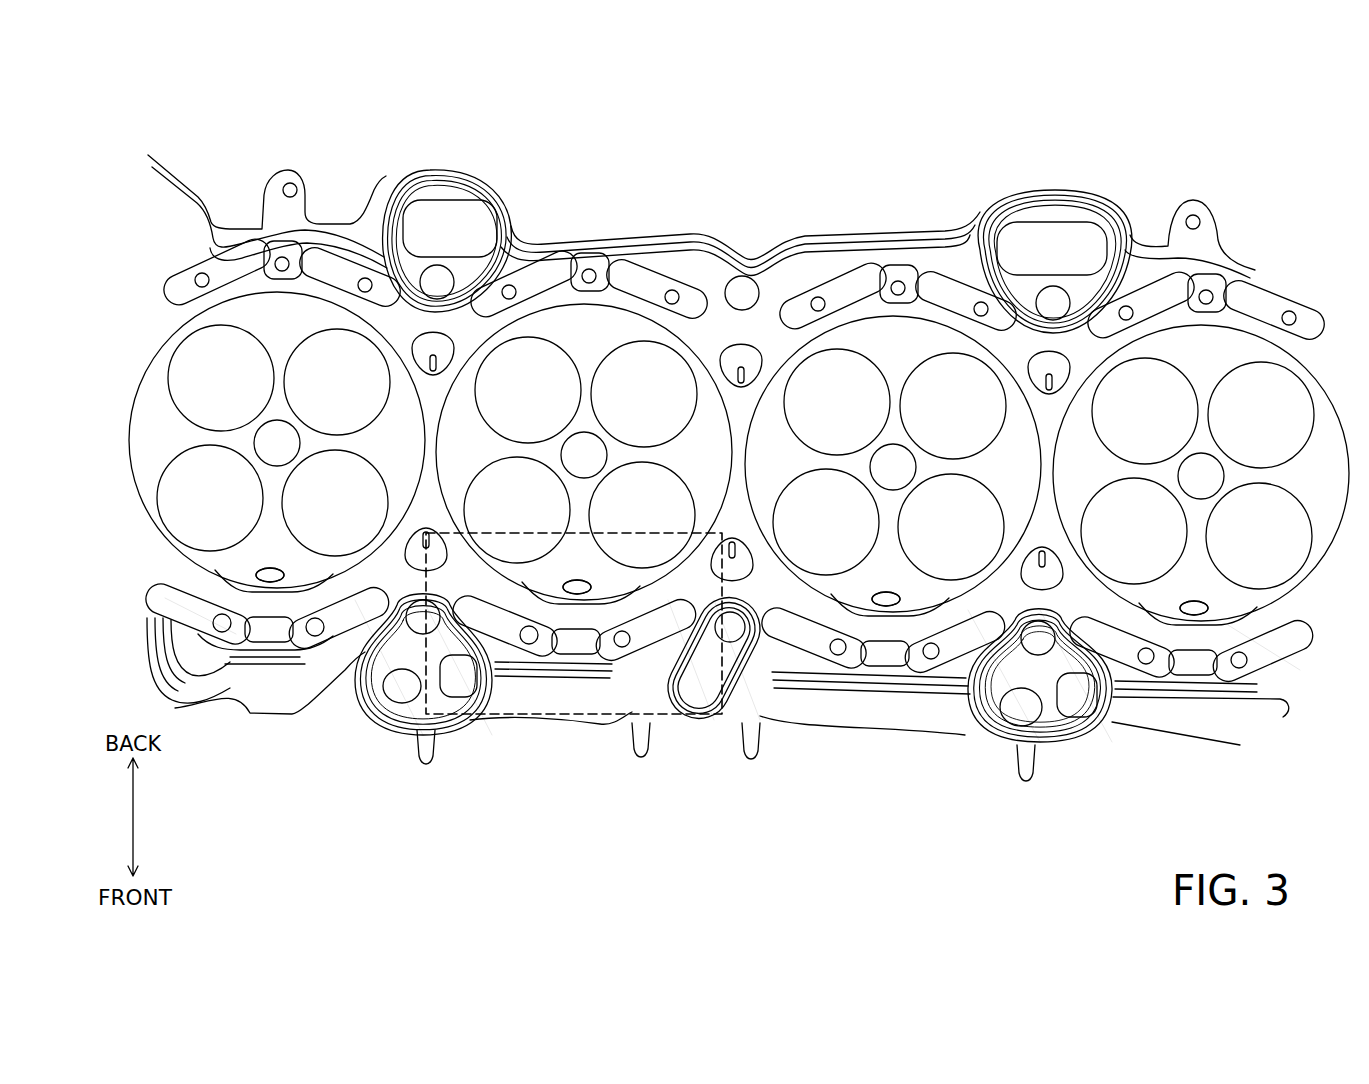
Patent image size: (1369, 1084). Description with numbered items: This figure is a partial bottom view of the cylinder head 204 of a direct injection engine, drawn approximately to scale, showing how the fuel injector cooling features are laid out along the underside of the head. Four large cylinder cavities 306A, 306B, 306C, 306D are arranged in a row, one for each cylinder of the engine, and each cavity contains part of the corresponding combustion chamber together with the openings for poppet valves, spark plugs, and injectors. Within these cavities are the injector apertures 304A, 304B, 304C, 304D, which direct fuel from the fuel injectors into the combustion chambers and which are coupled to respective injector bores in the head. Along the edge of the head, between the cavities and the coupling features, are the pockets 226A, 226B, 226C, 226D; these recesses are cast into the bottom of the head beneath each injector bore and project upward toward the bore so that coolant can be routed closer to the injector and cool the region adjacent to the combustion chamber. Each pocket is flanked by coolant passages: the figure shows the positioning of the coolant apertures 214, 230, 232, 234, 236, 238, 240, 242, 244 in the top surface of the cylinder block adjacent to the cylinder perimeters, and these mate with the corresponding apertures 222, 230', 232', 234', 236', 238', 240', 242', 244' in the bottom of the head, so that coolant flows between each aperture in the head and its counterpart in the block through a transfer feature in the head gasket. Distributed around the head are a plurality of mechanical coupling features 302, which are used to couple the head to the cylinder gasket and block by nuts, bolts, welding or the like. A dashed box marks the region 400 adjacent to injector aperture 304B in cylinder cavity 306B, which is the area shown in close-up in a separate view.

The cylinder head 204 is at (1302, 201).
The coolant aperture 214 is at (280, 262).
The aperture 222 is at (186, 288).
The pocket 226A is at (300, 610).
The pocket 226B is at (605, 620).
The pocket 226C is at (875, 641).
The pocket 226D is at (1222, 644).
The coolant aperture 230 is at (237, 684).
The coolant aperture 230' is at (173, 594).
The coolant aperture 232 is at (296, 690).
The coolant aperture 232' is at (389, 650).
The coolant aperture 234 is at (555, 698).
The aperture 234' is at (457, 650).
The coolant aperture 236 is at (610, 723).
The aperture 236' is at (689, 649).
The coolant aperture 238 is at (850, 707).
The aperture 238' is at (751, 652).
The coolant aperture 240 is at (946, 704).
The aperture 240' is at (1004, 664).
The coolant aperture 242 is at (1185, 725).
The aperture 242' is at (1076, 664).
The coolant aperture 244 is at (1277, 703).
The aperture 244' is at (1283, 632).
The mechanical coupling feature 302 is at (297, 188).
The injector aperture 304A is at (266, 583).
The injector aperture 304B is at (574, 594).
The injector aperture 304C is at (892, 605).
The injector aperture 304D is at (1190, 614).
The cylinder cavity 306A is at (155, 360).
The cylinder cavity 306B is at (487, 354).
The cylinder cavity 306C is at (795, 362).
The cylinder cavity 306D is at (1095, 374).
The region 400 is at (745, 715).